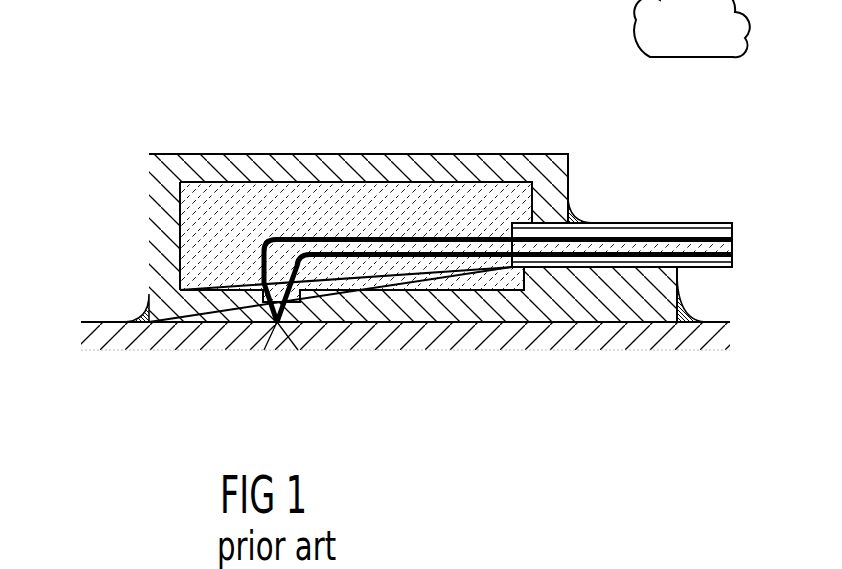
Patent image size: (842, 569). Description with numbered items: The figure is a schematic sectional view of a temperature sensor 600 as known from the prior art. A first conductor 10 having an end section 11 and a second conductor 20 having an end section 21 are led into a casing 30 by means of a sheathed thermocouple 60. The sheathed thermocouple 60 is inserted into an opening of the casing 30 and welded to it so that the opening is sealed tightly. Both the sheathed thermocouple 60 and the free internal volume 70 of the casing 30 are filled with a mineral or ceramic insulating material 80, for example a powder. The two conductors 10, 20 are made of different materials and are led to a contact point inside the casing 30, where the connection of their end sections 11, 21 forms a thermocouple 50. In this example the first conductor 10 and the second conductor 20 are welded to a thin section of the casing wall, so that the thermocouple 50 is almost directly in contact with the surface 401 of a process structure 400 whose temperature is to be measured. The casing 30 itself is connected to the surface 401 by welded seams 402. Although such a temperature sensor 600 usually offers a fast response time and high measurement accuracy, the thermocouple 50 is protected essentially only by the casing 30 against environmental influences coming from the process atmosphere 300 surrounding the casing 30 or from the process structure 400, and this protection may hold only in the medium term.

The temperature sensor 600 is at (210, 106).
The process atmosphere 300 is at (717, 47).
The casing 30 is at (503, 153).
The first conductor 10 is at (395, 236).
The second conductor 20 is at (450, 238).
The free internal volume 70 is at (319, 190).
The insulating material 80 is at (680, 238).
The sheathed thermocouple 60 is at (642, 222).
The thermocouple 50 is at (277, 322).
The end section 11 is at (277, 322).
The end section 21 is at (290, 328).
The process structure 400 is at (500, 340).
The surface 401 is at (663, 322).
The welded seams 402 is at (138, 312).